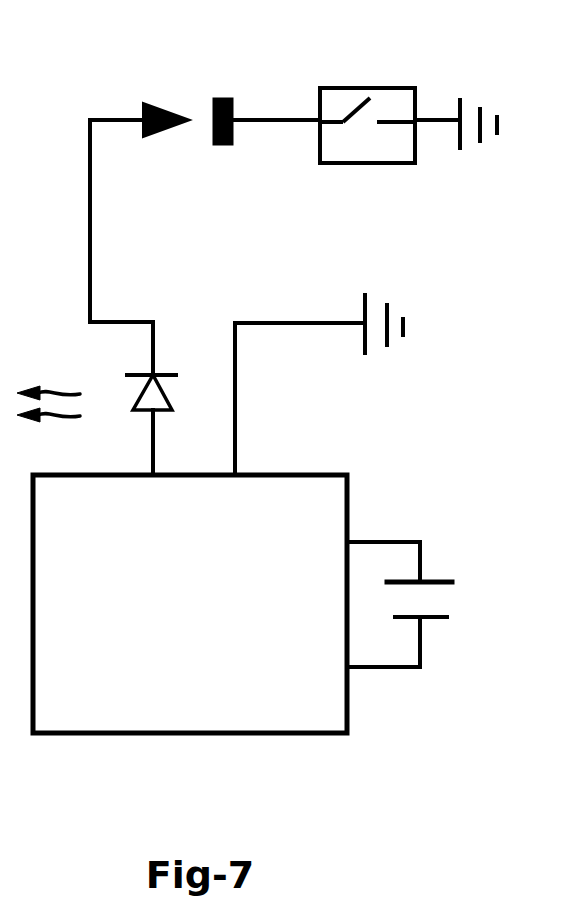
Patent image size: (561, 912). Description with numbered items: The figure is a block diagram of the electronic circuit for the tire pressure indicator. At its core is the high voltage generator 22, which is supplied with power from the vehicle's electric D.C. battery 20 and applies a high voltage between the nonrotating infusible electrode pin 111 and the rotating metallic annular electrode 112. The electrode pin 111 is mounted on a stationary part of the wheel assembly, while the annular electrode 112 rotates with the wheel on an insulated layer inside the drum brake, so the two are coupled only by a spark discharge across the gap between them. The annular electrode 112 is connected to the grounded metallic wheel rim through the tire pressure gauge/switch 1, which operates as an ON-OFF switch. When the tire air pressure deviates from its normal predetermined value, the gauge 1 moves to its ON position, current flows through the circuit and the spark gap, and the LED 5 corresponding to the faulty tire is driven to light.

The tire pressure gauge/switch 1 is at (395, 87).
The LED 5 is at (66, 406).
The electric D.C. battery 20 is at (448, 613).
The high voltage generator 22 is at (258, 737).
The nonrotating infusible electrode pin 111 is at (185, 105).
The rotating metallic annular electrode 112 is at (226, 90).